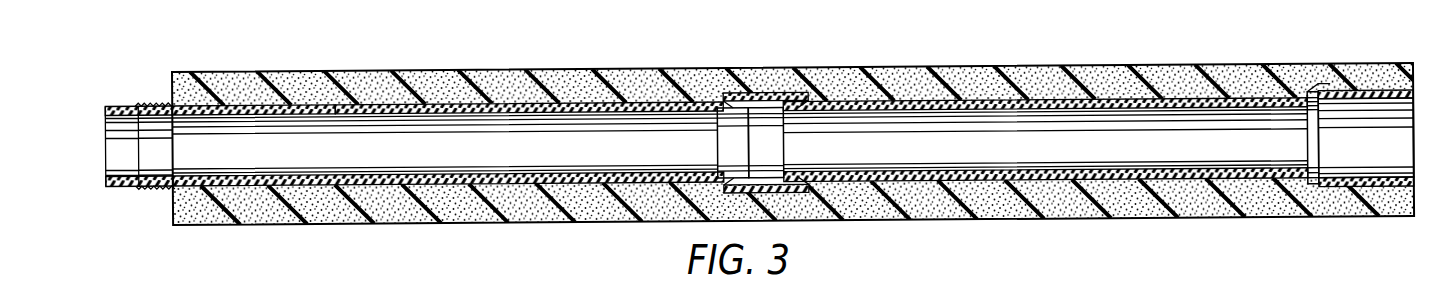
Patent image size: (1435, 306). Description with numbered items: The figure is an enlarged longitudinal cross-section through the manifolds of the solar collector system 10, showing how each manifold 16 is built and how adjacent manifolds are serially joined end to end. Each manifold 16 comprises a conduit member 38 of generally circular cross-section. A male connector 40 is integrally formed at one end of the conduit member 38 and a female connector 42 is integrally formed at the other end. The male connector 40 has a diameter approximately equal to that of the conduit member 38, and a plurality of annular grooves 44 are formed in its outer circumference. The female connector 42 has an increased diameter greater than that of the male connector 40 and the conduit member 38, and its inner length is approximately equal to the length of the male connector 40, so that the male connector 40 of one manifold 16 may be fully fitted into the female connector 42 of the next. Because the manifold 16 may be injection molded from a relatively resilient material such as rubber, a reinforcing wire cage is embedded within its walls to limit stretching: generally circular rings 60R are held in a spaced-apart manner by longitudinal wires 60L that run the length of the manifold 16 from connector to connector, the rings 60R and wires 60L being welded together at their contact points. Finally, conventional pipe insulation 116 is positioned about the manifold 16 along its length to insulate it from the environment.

The solar collector system 10 is at (649, 26).
The manifold 16 is at (437, 92).
The conduit member 38 is at (480, 142).
The male connector 40 is at (110, 207).
The female connector 42 is at (750, 100).
The annular grooves 44 is at (150, 193).
The longitudinal wires 60L is at (317, 98).
The circular rings 60R is at (357, 96).
The pipe insulation 116 is at (913, 73).